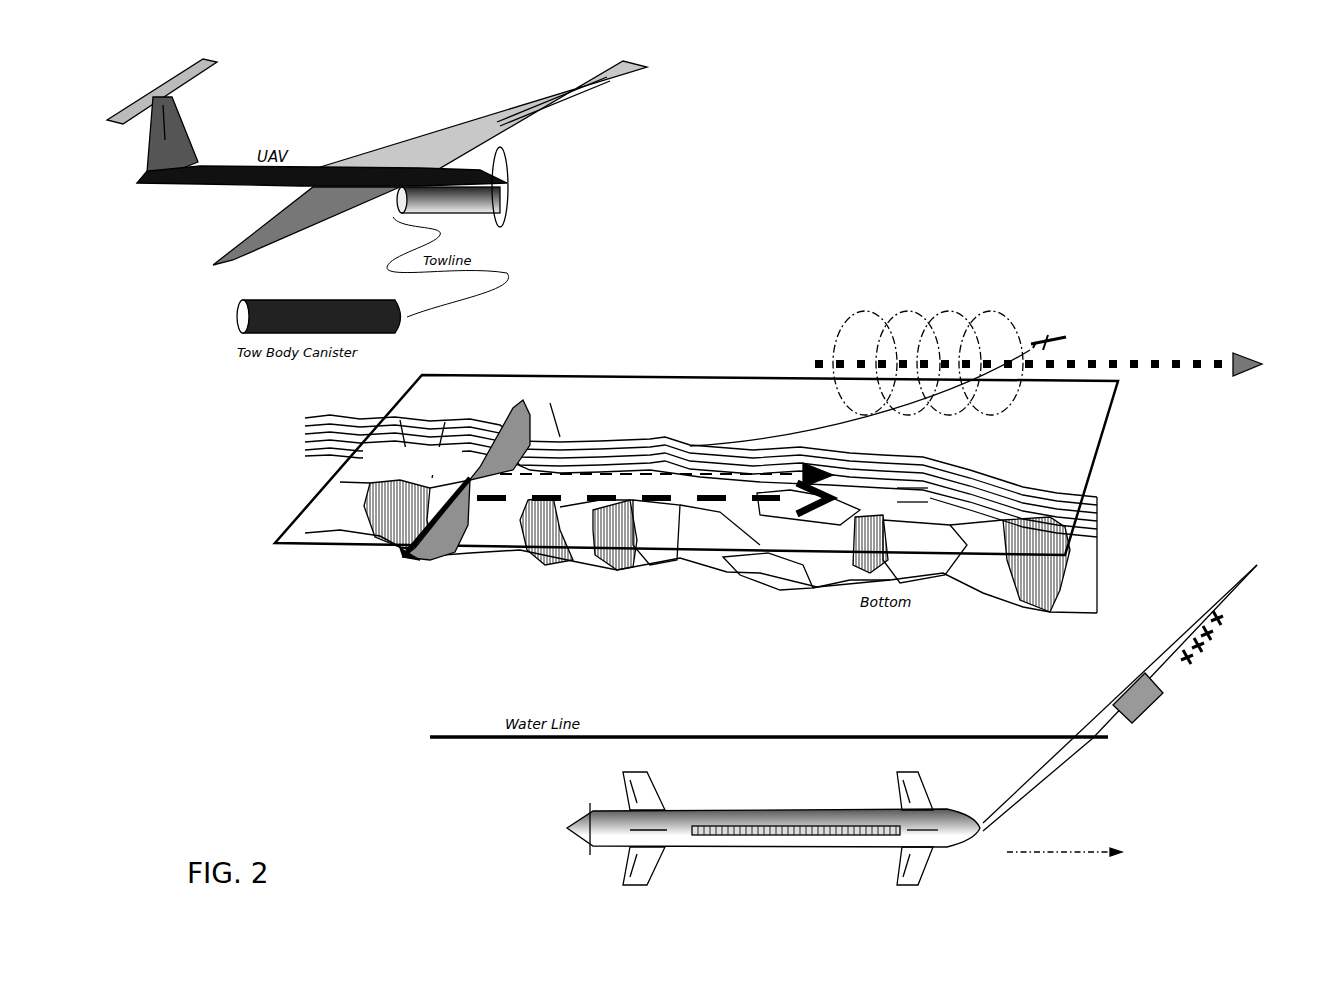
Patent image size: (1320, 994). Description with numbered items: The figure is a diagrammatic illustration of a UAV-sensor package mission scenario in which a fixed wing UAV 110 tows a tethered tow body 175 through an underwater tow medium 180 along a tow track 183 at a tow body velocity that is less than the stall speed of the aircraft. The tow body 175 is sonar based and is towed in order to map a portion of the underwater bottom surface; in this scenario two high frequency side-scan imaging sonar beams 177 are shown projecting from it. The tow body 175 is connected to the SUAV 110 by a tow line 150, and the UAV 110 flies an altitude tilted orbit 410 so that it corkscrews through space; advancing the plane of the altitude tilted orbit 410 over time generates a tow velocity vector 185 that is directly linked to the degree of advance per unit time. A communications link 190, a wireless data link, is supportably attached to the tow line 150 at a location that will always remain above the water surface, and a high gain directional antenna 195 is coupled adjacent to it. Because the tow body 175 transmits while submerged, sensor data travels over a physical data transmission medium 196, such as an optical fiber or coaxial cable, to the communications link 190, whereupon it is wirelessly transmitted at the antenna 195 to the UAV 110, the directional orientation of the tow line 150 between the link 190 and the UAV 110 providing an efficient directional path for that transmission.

The fixed wing SUAV 110 is at (1078, 334).
The tow line 150 is at (800, 467).
The tow body 175 is at (689, 671).
The side-scan imaging sonar beams 177 is at (435, 580).
The tow medium 180 is at (696, 456).
The tow track 183 is at (820, 666).
The tow velocity vector 185 is at (1107, 427).
The communications link 190 is at (1157, 714).
The high gain directional antenna 195 is at (1217, 646).
The physical data transmission medium 196 is at (1072, 792).
The altitude tilted orbit 410 is at (925, 322).